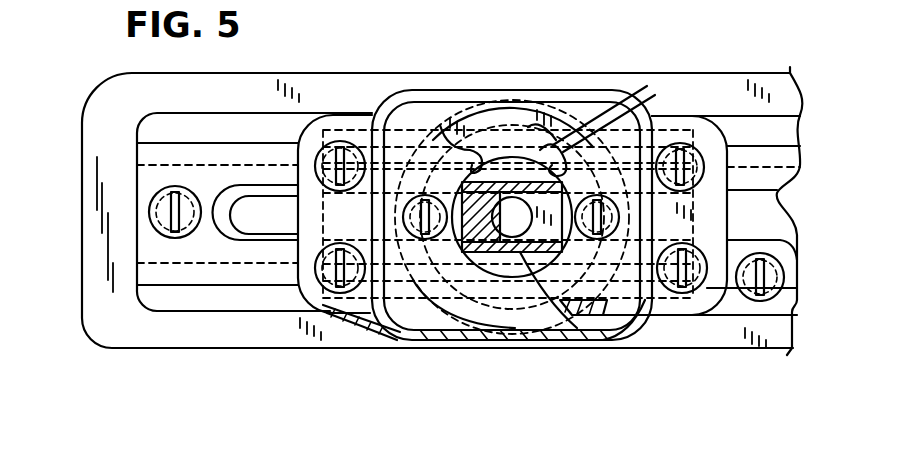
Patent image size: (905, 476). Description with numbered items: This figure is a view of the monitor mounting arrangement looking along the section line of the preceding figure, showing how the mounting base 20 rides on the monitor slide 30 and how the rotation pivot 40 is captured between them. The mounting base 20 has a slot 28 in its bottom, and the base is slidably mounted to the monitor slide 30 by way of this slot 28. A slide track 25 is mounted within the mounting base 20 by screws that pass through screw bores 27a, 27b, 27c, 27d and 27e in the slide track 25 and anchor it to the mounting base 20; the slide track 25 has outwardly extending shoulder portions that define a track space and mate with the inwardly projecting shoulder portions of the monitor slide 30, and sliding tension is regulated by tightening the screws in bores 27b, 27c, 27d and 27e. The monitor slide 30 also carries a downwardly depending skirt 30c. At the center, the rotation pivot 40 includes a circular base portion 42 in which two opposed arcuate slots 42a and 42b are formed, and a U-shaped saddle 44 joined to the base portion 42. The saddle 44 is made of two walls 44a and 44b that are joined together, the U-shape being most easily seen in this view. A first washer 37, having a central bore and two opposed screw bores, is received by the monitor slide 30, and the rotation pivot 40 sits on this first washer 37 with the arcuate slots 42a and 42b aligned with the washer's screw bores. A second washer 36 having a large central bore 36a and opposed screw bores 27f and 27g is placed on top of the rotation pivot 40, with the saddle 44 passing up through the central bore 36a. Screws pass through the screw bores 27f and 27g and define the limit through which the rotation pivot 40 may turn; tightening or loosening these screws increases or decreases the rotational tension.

The mounting base 20 is at (313, 73).
The slide track 25 is at (195, 147).
The screw bore 27a is at (157, 201).
The screw bore 27b is at (340, 147).
The screw bore 27c is at (318, 278).
The screw bore 27d is at (725, 122).
The screw bore 27e is at (703, 278).
The screw bore 27f is at (406, 197).
The screw bore 27g is at (640, 227).
The slot 28 is at (271, 197).
The monitor slide 30 is at (440, 125).
The skirt 30c is at (585, 330).
The second washer 36 is at (413, 318).
The central bore 36a is at (481, 167).
The first washer 37 is at (428, 316).
The rotation pivot 40 is at (467, 120).
The circular base portion 42 is at (580, 140).
The arcuate slot 42a is at (528, 127).
The arcuate slot 42b is at (516, 423).
The U-shaped saddle 44 is at (480, 232).
The wall 44a is at (603, 317).
The wall 44b is at (587, 133).